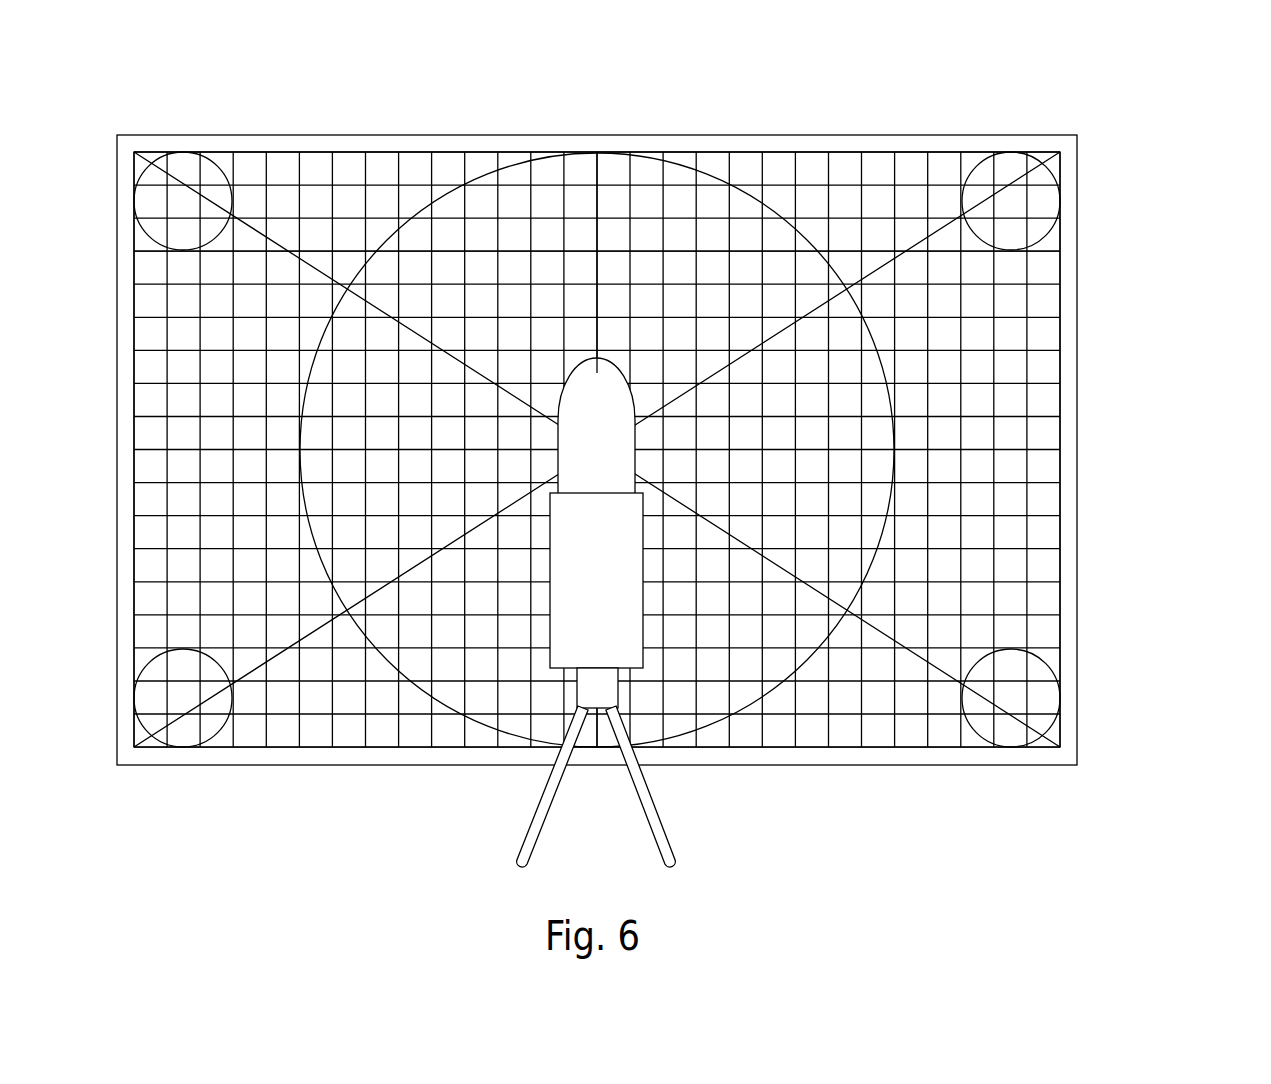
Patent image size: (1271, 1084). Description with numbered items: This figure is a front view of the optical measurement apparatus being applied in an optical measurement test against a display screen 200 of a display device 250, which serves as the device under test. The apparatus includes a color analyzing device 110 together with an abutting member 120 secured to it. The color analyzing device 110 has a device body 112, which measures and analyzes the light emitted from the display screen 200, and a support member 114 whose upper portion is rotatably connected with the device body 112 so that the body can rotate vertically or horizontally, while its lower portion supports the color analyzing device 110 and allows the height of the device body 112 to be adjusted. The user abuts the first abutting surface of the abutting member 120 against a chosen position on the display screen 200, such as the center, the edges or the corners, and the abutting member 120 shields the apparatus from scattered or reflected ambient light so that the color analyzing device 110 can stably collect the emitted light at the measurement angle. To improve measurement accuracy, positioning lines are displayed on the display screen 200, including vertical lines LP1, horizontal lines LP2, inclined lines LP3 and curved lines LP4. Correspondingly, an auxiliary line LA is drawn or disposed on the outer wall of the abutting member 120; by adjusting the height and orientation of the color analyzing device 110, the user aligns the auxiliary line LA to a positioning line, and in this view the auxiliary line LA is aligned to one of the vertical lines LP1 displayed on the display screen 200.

The color analyzing device 110 is at (652, 594).
The device body 112 is at (636, 620).
The support member 114 is at (656, 812).
The abutting member 120 is at (630, 437).
The display screen 200 is at (811, 172).
The display device 250 is at (893, 149).
The auxiliary line LA is at (588, 361).
The vertical lines LP1 is at (595, 235).
The horizontal lines LP2 is at (678, 248).
The inclined lines LP3 is at (278, 243).
The curved lines LP4 is at (420, 215).